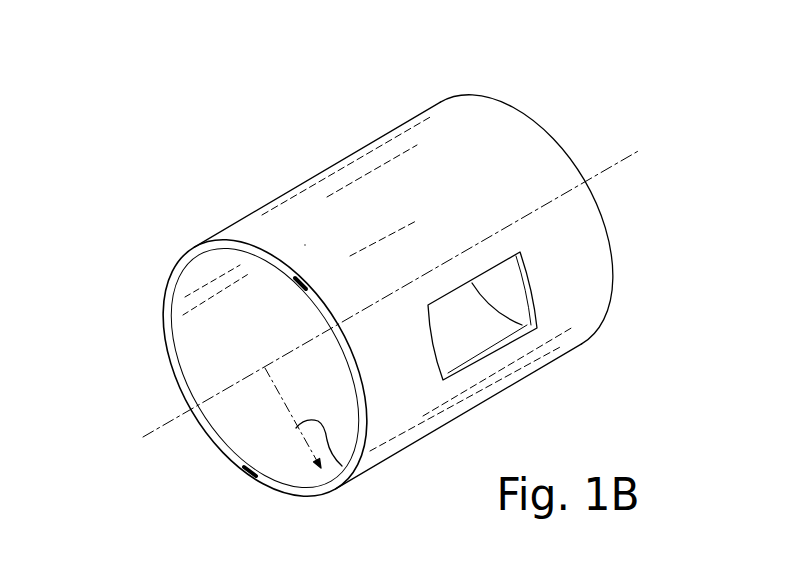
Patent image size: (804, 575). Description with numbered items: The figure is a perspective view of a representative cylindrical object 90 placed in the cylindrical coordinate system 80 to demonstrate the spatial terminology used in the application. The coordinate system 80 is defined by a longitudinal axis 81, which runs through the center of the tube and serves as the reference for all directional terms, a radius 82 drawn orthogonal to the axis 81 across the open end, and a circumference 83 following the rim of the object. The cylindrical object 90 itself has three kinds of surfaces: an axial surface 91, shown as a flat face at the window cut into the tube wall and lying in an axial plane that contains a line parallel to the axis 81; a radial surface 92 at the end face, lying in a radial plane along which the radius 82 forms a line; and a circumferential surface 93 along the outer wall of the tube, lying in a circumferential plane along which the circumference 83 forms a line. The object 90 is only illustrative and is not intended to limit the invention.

The cylindrical coordinate system 80 is at (547, 106).
The longitudinal axis 81 is at (148, 436).
The radius 82 is at (350, 472).
The circumference 83 is at (173, 270).
The cylindrical object 90 is at (422, 98).
The axial surface 91 is at (510, 329).
The radial surface 92 is at (280, 485).
The circumferential surface 93 is at (370, 190).